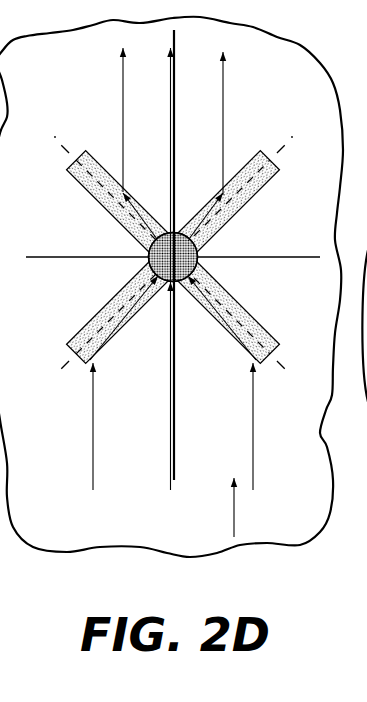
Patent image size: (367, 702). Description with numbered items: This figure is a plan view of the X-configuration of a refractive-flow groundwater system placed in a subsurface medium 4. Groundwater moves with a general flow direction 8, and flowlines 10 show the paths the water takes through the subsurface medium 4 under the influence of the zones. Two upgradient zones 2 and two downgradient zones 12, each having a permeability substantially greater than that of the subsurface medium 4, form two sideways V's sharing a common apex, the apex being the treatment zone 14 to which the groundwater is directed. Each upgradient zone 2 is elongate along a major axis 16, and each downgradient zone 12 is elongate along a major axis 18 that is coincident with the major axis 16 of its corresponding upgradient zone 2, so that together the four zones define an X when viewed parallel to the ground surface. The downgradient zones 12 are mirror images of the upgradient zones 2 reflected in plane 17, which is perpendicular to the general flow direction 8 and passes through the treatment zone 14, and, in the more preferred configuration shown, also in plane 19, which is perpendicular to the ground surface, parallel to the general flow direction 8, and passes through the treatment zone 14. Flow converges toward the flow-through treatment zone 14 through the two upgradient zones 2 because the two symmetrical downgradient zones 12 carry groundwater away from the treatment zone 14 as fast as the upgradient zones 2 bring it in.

The upgradient zone 2 is at (93, 318).
The subsurface medium 4 is at (61, 100).
The general flow direction 8 is at (235, 513).
The flowlines 10 is at (170, 115).
The downgradient zone 12 is at (93, 193).
The treatment zone 14 is at (149, 262).
The major axis of upgradient zone 16 is at (65, 367).
The plane perpendicular to general flow direction 17 is at (295, 256).
The major axis of downgradient zone 18 is at (61, 145).
The plane parallel to general flow direction 19 is at (175, 31).